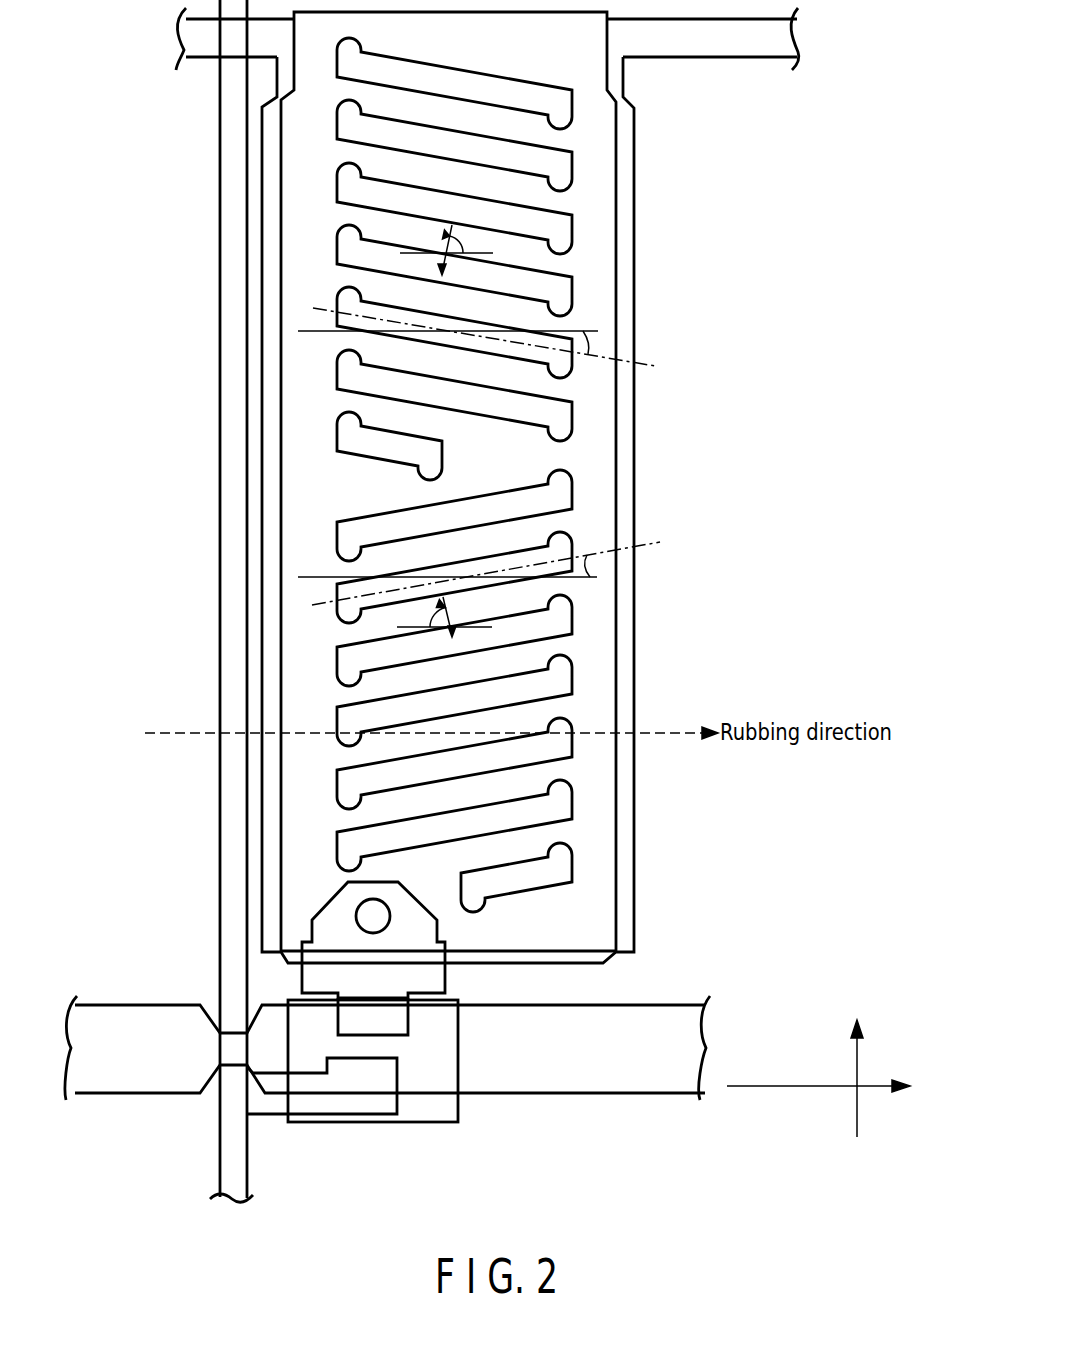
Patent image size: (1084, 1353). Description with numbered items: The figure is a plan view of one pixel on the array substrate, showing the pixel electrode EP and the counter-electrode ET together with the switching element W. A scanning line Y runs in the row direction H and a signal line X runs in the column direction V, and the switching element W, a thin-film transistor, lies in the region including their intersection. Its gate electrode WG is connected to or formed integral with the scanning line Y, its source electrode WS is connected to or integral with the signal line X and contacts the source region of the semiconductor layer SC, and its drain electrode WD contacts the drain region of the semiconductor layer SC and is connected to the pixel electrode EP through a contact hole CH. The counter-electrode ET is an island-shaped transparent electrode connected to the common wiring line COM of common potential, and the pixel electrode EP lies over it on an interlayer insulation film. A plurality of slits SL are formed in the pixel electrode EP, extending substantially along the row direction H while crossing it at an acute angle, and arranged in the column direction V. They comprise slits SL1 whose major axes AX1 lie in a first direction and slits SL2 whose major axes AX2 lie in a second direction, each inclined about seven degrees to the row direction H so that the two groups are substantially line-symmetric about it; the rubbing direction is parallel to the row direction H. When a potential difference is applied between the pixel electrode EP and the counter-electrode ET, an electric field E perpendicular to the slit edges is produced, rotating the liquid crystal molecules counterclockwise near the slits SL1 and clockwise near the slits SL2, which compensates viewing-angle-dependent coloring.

The common wiring line COM is at (799, 36).
The counter-electrode ET is at (635, 868).
The pixel electrode EP is at (617, 908).
The slits SL is at (543, 475).
The slits SL1 is at (572, 413).
The slits SL2 is at (572, 492).
The major axis AX1 is at (508, 343).
The major axis AX2 is at (507, 562).
The electric field E is at (445, 439).
The contact hole CH is at (356, 915).
The drain electrode WD is at (408, 1020).
The gate electrode WG is at (443, 1068).
The semiconductor layer SC is at (458, 1120).
The source electrode WS is at (305, 1115).
The switching element W is at (378, 1124).
The signal line X is at (236, 1188).
The scanning line Y is at (693, 1055).
The column direction V is at (864, 1068).
The row direction H is at (828, 1085).